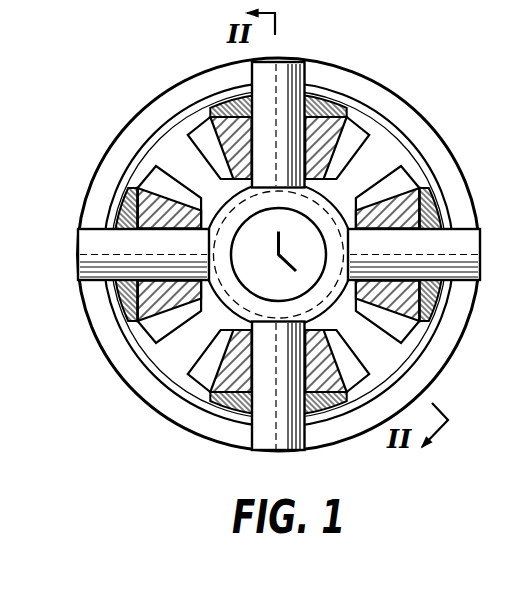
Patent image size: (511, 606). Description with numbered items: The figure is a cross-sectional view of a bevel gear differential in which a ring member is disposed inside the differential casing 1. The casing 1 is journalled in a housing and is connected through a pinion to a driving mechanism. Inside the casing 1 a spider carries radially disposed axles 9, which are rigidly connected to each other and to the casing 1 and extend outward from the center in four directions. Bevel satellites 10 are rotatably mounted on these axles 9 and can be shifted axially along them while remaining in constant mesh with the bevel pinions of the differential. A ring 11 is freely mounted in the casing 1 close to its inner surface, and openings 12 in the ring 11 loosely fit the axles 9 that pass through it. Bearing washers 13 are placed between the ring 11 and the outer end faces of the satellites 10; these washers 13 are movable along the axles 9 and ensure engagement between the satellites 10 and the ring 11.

The differential casing 1 is at (407, 92).
The radially disposed axles 9 is at (448, 235).
The bevel satellites 10 is at (173, 207).
The ring 11 is at (180, 125).
The openings 12 is at (250, 415).
The bearing washers 13 is at (123, 302).